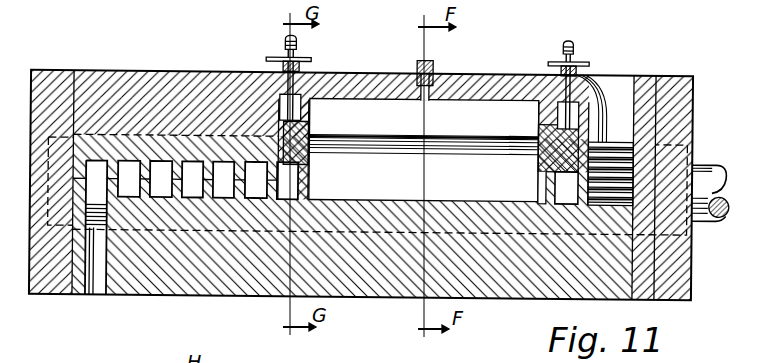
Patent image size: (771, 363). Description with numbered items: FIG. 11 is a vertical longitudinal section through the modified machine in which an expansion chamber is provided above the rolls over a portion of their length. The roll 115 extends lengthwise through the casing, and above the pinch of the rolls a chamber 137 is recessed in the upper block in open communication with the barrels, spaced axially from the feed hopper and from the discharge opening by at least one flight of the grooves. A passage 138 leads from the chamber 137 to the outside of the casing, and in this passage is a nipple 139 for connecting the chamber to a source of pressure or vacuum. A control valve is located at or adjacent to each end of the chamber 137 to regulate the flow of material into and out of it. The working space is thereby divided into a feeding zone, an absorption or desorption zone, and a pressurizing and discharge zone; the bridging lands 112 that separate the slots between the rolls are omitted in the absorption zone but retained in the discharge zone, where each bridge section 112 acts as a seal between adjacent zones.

The bridge section 112 is at (272, 190).
The roll 115 is at (694, 245).
The chamber 137 is at (424, 150).
The passage 138 is at (431, 90).
The nipple 139 is at (416, 68).